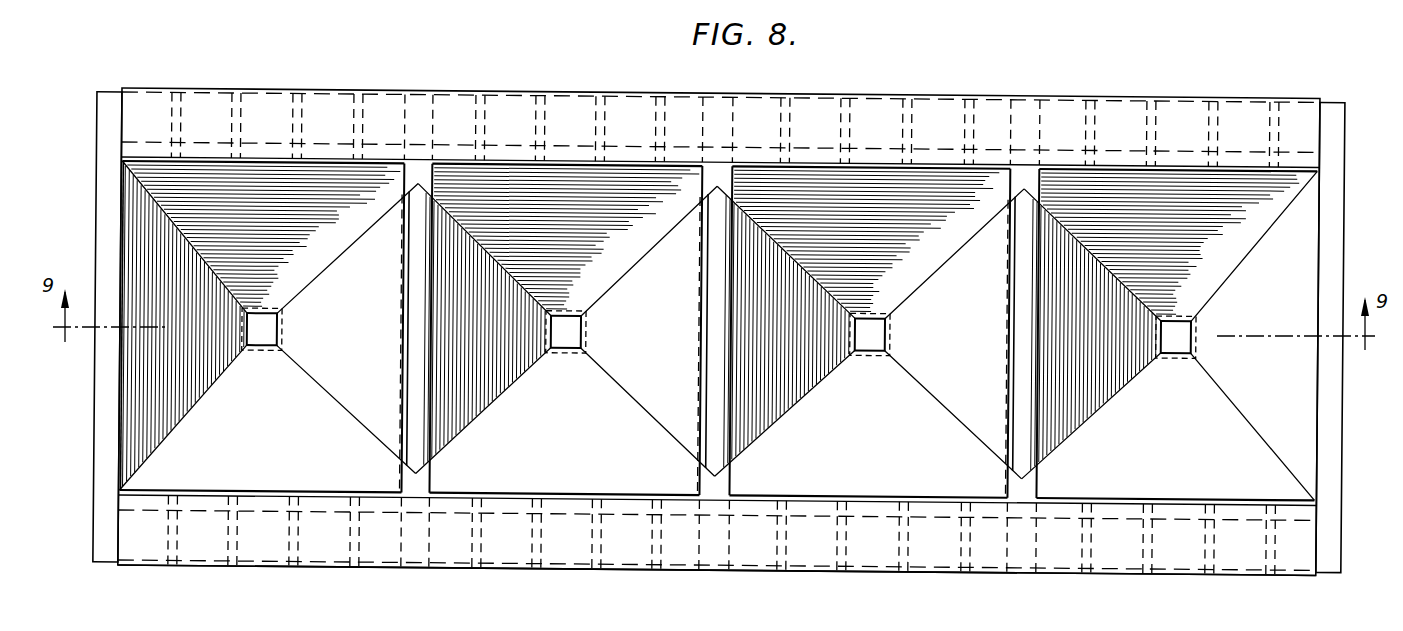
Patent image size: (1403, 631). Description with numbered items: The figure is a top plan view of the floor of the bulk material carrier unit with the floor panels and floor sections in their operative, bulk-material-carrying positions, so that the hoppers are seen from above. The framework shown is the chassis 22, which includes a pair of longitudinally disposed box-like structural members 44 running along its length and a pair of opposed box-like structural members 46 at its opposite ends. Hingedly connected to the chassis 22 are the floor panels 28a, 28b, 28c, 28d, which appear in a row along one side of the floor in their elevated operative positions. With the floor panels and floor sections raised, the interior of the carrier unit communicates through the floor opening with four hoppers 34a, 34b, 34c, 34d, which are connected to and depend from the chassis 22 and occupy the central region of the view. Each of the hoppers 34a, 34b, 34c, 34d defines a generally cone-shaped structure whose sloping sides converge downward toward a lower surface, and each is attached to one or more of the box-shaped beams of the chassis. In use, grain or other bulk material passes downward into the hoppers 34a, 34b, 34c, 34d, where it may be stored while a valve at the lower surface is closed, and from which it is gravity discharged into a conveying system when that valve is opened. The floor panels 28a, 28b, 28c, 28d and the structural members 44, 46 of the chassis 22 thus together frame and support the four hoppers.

The hopper 34a is at (280, 432).
The hopper 34b is at (584, 432).
The hopper 34c is at (888, 432).
The hopper 34d is at (1178, 432).
The floor panel 28a is at (284, 545).
The floor panel 28b is at (584, 545).
The floor panel 28c is at (887, 545).
The floor panel 28d is at (1132, 545).
The chassis 22 is at (1162, 553).
The longitudinally disposed box-like structural member 44 is at (490, 551).
The opposed box-like structural member 46 is at (1330, 571).